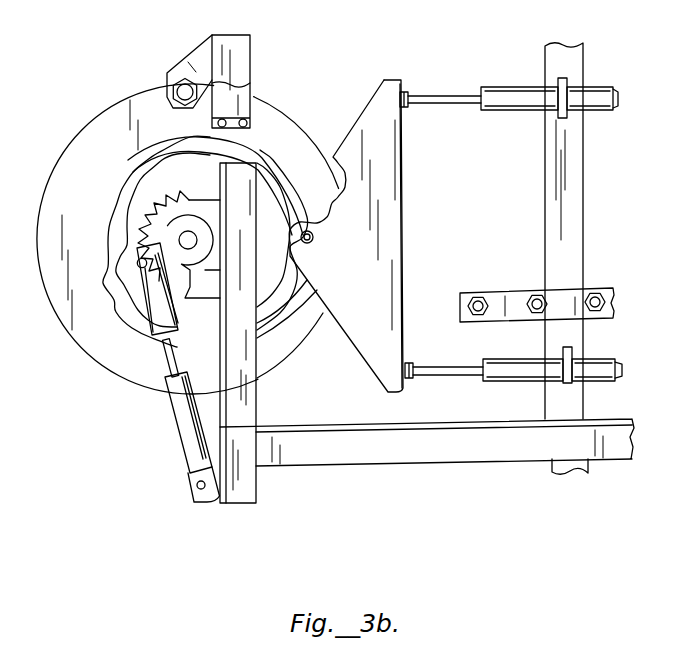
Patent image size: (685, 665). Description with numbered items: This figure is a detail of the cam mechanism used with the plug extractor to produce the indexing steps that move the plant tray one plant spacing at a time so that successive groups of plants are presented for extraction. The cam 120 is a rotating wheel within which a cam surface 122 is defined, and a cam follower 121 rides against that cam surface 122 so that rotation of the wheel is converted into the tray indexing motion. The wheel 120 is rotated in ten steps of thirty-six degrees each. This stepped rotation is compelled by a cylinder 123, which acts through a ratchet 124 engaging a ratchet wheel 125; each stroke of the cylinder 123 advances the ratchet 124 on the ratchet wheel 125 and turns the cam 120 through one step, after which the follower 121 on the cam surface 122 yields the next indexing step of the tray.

The cam 120 is at (100, 194).
The cam follower 121 is at (310, 212).
The cam surface 122 is at (270, 165).
The cylinder 123 is at (184, 422).
The ratchet 124 is at (140, 264).
The ratchet wheel 125 is at (170, 193).